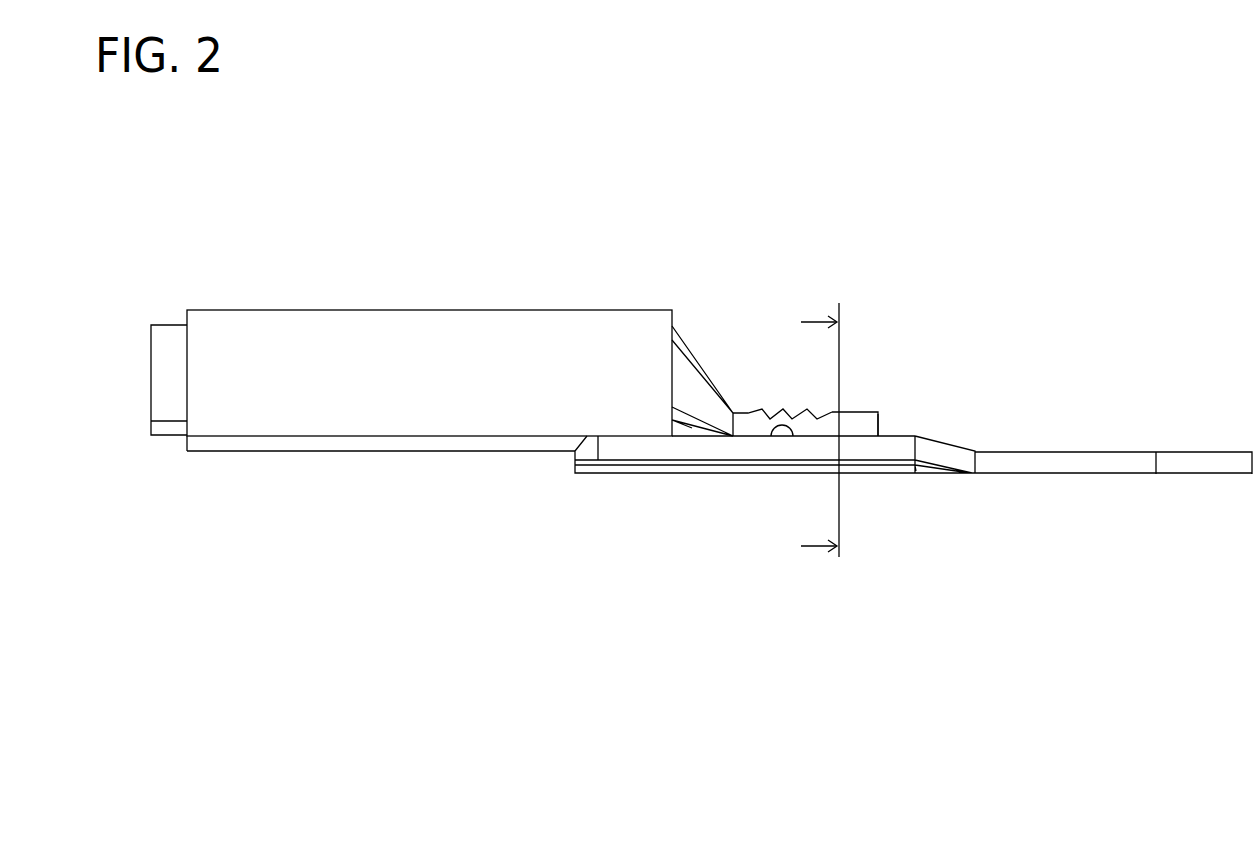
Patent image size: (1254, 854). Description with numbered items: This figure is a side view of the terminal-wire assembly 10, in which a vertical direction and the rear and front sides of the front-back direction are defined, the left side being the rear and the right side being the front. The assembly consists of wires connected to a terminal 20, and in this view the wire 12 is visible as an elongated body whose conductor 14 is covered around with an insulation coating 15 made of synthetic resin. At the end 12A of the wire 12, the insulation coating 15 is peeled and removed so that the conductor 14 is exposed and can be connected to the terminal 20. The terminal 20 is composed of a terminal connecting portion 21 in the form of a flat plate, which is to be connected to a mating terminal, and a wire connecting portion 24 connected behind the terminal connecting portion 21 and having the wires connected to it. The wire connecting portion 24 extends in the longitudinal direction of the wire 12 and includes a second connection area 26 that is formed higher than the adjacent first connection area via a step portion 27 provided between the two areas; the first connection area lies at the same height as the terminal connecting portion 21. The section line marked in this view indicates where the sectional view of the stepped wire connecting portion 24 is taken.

The terminal-wire assembly 10 is at (606, 248).
The wire 12 is at (468, 310).
The end of wire 12A is at (857, 412).
The conductor 14 is at (880, 422).
The insulation coating 15 is at (400, 320).
The terminal 20 is at (1042, 452).
The terminal connecting portion 21 is at (1121, 452).
The wire connecting portion 24 is at (758, 446).
The second connection area 26 is at (777, 432).
The step portion 27 is at (620, 468).